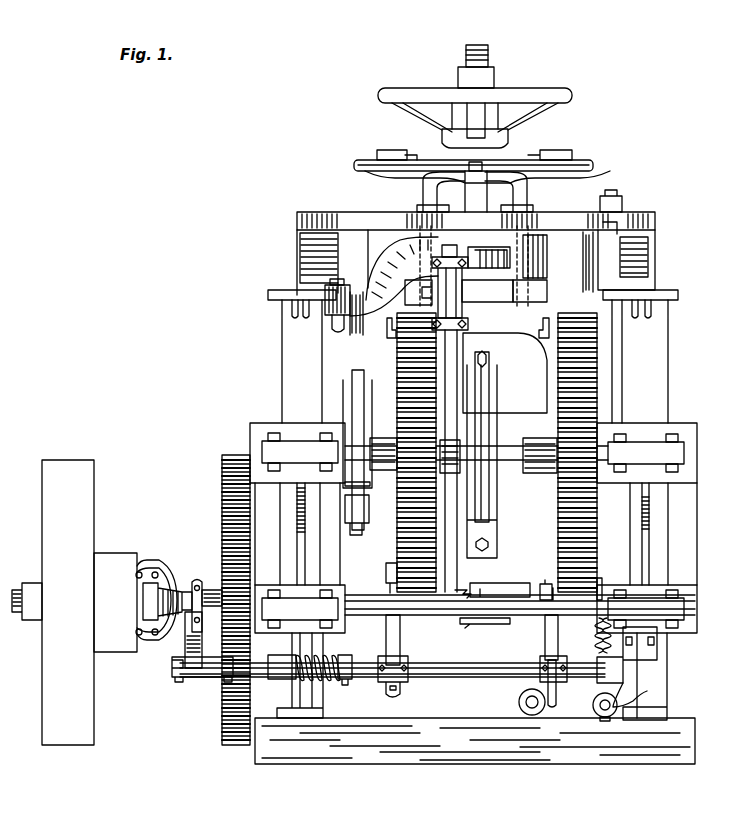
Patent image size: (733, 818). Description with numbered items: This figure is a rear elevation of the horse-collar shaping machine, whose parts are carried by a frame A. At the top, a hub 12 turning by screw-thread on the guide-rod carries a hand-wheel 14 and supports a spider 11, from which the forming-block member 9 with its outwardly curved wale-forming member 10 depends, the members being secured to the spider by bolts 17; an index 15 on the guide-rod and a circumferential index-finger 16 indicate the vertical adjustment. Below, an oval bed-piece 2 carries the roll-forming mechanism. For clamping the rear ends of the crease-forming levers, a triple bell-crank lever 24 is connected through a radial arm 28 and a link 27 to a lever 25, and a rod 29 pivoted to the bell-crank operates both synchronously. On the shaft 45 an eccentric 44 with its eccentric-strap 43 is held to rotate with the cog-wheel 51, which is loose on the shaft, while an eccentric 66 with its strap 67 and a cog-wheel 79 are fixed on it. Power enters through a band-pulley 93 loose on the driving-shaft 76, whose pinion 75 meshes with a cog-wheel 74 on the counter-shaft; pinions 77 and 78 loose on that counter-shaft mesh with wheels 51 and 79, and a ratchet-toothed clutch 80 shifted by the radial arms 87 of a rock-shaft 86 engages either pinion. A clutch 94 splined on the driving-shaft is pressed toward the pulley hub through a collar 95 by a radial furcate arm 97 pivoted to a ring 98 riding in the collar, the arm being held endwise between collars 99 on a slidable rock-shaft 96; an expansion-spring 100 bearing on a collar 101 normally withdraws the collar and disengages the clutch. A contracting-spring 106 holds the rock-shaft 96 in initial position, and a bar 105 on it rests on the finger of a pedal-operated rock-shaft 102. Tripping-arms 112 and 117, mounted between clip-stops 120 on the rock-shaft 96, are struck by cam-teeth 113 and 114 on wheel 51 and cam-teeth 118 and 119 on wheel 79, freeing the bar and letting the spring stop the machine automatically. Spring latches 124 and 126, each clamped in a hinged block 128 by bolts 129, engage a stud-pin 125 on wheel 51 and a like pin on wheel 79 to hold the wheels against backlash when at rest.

The frame A is at (454, 727).
The index 15 is at (486, 54).
The index-finger 16 is at (458, 66).
The hand-wheel 14 is at (552, 88).
The hub 12 is at (442, 134).
The bolts 17 is at (480, 162).
The spider 11 is at (560, 150).
The wale-forming member 10 is at (585, 170).
The forming-block member 9 is at (524, 195).
The lever 25 is at (554, 235).
The latch 126 is at (617, 197).
The radial arm 28 is at (444, 245).
The link 27 is at (474, 248).
The triple bell-crank lever 24 is at (394, 276).
The block 128 is at (460, 295).
The spring latch 124 is at (457, 309).
The bolts 129 is at (467, 331).
The rod 29 is at (339, 328).
The cam-tooth 113 is at (386, 338).
The eccentric-strap 43 is at (360, 373).
The eccentric 44 is at (368, 395).
The cam-tooth 118 is at (547, 336).
The bed-piece 2 is at (524, 387).
The cog-wheel 74 is at (222, 499).
The pinion 75 is at (222, 593).
The cam-tooth 114 is at (386, 563).
The cog-wheel 51 is at (439, 548).
The pinion 77 is at (462, 590).
The driving-shaft 76 is at (487, 596).
The cam-tooth 119 is at (549, 578).
The pinion 78 is at (600, 584).
The cog-wheel 79 is at (589, 543).
The stud-pin 125 is at (460, 456).
The shaft 45 is at (545, 471).
The eccentric 66 is at (492, 514).
The strap 67 is at (490, 532).
The band-pulley 93 is at (53, 602).
The clutch 94 is at (137, 555).
The collar 95 is at (170, 635).
The ring 98 is at (192, 582).
The radial furcate arm 97 is at (185, 630).
The collars 99 is at (178, 680).
The rock-shaft 96 is at (456, 670).
The collar 101 is at (345, 658).
The expansion-spring 100 is at (330, 676).
The tripping-arm 112 is at (400, 651).
The clip-stops 120 is at (408, 680).
The clutch 80 is at (474, 623).
The tripping-arm 117 is at (545, 642).
The radial arms 87 is at (525, 655).
The contracting-spring 106 is at (598, 642).
The bar 105 is at (600, 680).
The rock-shaft 86 is at (525, 713).
The rock-shaft 102 is at (602, 715).